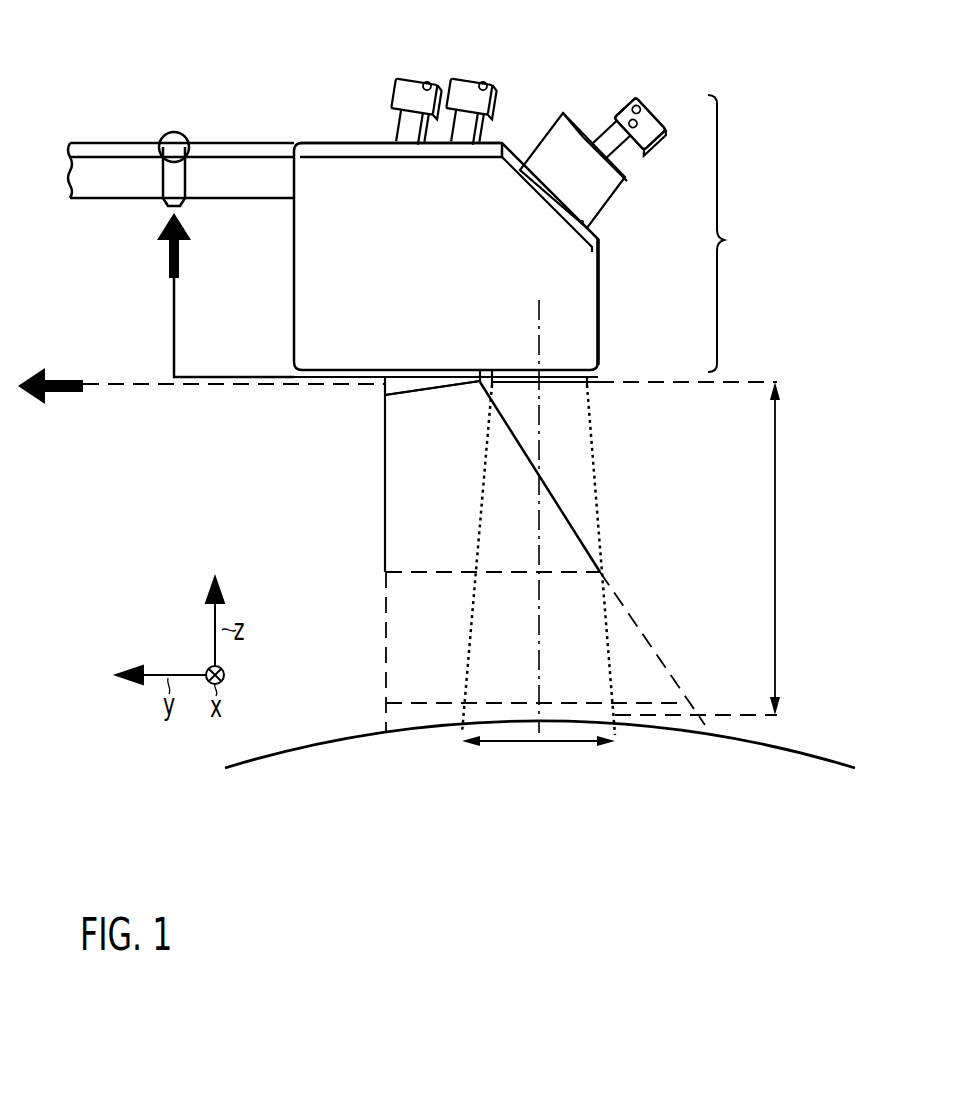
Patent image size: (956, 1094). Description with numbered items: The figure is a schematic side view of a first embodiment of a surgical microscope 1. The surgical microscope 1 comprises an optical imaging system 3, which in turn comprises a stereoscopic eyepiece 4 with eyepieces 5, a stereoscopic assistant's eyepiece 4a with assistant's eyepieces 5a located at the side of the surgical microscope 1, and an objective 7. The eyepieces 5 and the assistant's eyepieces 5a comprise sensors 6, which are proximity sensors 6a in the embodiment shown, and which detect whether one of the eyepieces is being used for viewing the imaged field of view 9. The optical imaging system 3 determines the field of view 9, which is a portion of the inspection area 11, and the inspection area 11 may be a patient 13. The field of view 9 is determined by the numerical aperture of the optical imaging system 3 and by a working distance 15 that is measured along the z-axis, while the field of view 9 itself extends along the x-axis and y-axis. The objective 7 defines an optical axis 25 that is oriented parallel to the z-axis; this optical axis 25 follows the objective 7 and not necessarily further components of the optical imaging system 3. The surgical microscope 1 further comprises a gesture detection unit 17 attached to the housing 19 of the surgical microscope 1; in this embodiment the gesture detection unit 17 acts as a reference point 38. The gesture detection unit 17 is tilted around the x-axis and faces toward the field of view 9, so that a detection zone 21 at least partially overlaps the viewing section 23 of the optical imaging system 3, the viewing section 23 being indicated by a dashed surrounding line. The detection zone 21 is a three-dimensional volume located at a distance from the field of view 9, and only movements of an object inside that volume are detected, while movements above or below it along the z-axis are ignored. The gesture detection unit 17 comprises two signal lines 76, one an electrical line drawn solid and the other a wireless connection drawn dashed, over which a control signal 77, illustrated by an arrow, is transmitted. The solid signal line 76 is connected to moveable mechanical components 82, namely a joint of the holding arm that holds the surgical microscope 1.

The surgical microscope 1 is at (306, 122).
The optical imaging system 3 is at (725, 233).
The stereoscopic eyepiece 4 is at (633, 94).
The stereoscopic assistant's eyepiece 4a is at (453, 66).
The eyepieces 5 is at (620, 108).
The assistant's eyepieces 5a is at (395, 96).
The sensors 6 is at (427, 82).
The proximity sensors 6a is at (642, 100).
The objective 7 is at (565, 380).
The field of view 9 is at (540, 743).
The inspection area 11 is at (735, 737).
The patient 13 is at (422, 810).
The working distance 15 is at (775, 562).
The gesture detection unit 17 is at (385, 390).
The reference point 38 is at (432, 388).
The housing 19 is at (305, 330).
The detection zone 21 is at (386, 612).
The viewing section 23 is at (594, 472).
The optical axis 25 is at (539, 312).
The signal line 76 is at (174, 302).
The control signal 77 is at (169, 262).
The moveable mechanical components 82 is at (208, 150).